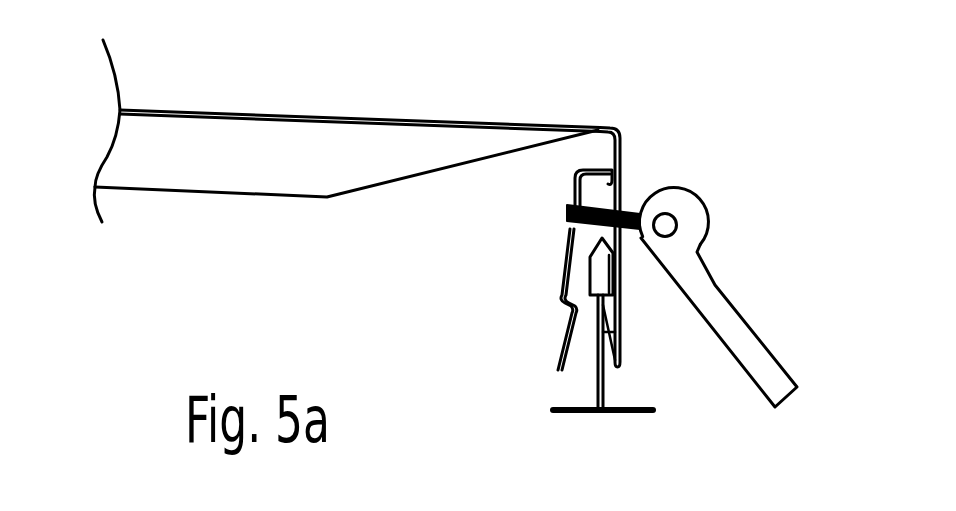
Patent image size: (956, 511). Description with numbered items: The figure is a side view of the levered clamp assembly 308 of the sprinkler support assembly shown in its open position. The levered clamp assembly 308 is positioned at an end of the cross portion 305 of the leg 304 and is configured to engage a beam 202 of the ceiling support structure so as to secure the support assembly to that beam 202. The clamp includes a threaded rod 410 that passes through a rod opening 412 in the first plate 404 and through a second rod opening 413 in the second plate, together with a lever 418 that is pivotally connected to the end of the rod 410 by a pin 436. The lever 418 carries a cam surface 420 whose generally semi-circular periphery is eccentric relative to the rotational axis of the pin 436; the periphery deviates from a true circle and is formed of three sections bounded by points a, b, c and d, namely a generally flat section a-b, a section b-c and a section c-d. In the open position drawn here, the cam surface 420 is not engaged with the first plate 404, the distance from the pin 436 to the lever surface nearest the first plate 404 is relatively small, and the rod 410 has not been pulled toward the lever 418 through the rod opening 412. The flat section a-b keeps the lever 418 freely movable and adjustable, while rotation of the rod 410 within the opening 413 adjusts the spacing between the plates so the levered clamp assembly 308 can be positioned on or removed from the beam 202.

The levered clamp assembly 308 is at (370, 88).
The leg 304 is at (346, 154).
The cross portion 305 is at (300, 157).
The rod opening 412 is at (613, 208).
The threaded rod 410 is at (567, 216).
The rod opening 413 is at (567, 226).
The first plate 404 is at (620, 320).
The beam 202 is at (597, 390).
The cam surface 420 is at (705, 207).
The pin 436 is at (667, 222).
The lever 418 is at (710, 300).
The point a is at (645, 240).
The point b is at (626, 164).
The point c is at (693, 200).
The point d is at (700, 225).